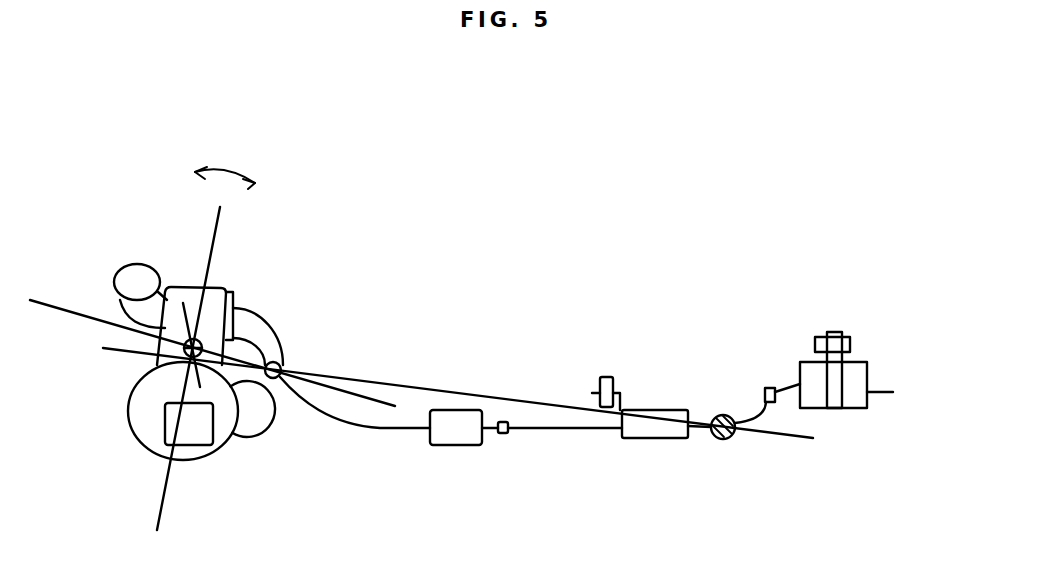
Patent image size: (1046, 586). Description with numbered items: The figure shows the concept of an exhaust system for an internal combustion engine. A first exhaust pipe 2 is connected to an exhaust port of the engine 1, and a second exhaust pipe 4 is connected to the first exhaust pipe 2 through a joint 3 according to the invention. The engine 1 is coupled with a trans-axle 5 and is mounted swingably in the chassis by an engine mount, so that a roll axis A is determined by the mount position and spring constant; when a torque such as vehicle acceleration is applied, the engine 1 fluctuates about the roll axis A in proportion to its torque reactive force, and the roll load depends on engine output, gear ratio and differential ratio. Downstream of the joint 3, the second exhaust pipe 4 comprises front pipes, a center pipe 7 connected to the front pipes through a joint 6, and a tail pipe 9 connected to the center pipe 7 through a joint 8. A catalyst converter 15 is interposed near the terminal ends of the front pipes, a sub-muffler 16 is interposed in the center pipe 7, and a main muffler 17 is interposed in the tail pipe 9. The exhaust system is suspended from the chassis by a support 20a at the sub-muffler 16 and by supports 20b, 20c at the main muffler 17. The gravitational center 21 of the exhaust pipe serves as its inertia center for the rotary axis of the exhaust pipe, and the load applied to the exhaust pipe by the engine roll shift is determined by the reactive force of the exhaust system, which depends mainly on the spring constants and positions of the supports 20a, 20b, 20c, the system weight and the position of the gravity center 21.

The engine 1 is at (213, 293).
The roll axis A is at (183, 303).
The first exhaust pipe 2 is at (257, 327).
The joint 3 is at (283, 365).
The second exhaust pipe 4 is at (377, 430).
The trans-axle 5 is at (152, 437).
The joint 6 is at (503, 433).
The center pipe 7 is at (558, 430).
The joint 8 is at (763, 387).
The tail pipe 9 is at (787, 382).
The catalyst converter 15 is at (447, 445).
The sub-muffler 16 is at (655, 438).
The main muffler 17 is at (853, 400).
The support 20a is at (607, 375).
The support 20b is at (815, 338).
The support 20c is at (853, 338).
The gravitational center of the exhaust pipe 21 is at (722, 440).